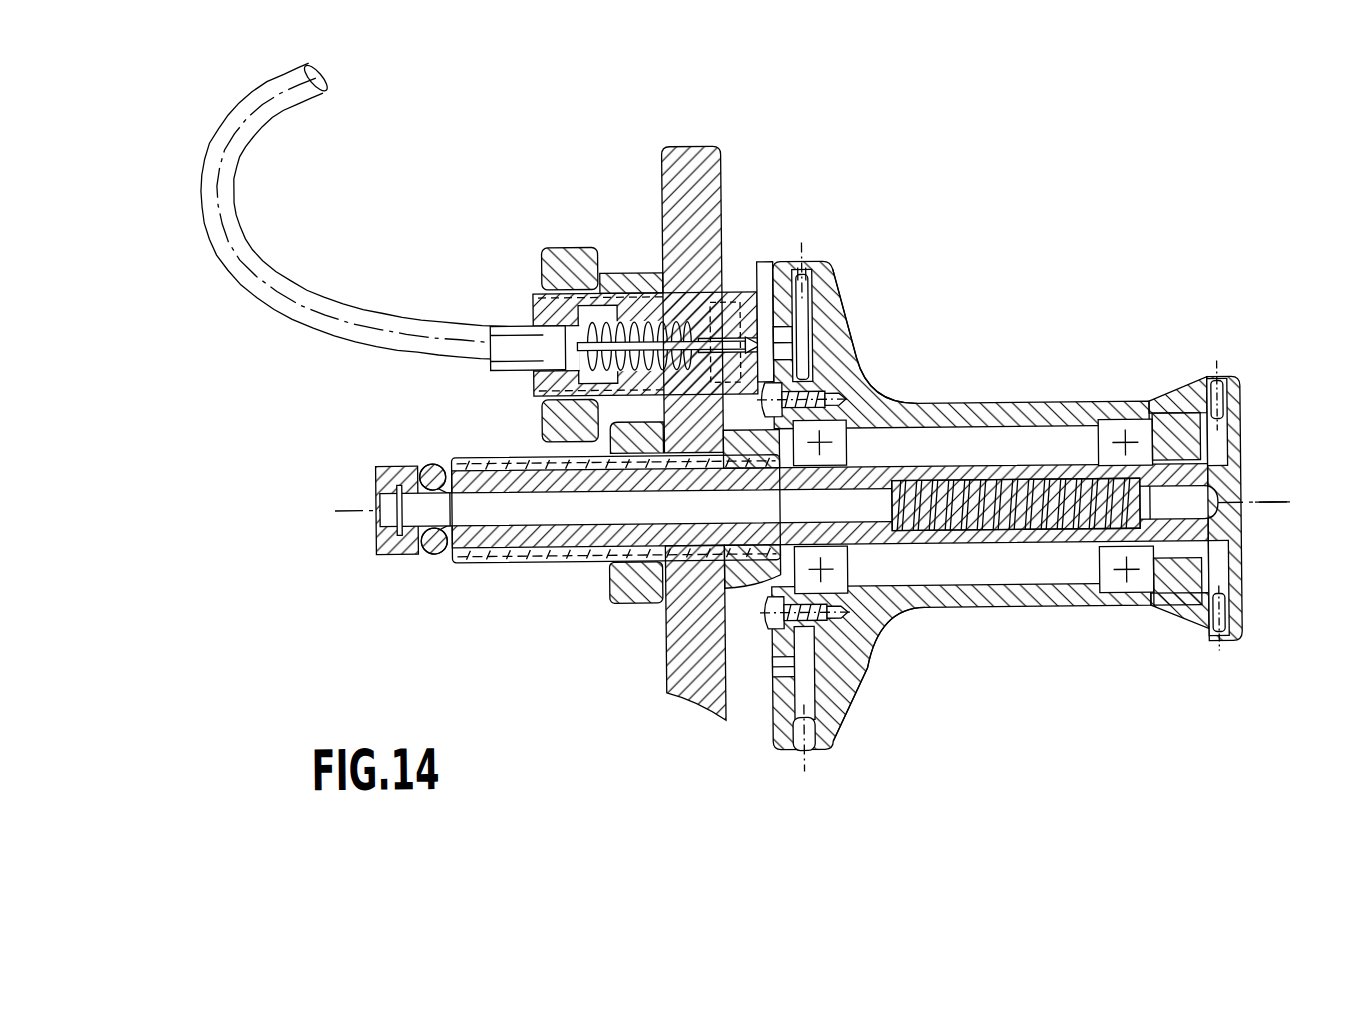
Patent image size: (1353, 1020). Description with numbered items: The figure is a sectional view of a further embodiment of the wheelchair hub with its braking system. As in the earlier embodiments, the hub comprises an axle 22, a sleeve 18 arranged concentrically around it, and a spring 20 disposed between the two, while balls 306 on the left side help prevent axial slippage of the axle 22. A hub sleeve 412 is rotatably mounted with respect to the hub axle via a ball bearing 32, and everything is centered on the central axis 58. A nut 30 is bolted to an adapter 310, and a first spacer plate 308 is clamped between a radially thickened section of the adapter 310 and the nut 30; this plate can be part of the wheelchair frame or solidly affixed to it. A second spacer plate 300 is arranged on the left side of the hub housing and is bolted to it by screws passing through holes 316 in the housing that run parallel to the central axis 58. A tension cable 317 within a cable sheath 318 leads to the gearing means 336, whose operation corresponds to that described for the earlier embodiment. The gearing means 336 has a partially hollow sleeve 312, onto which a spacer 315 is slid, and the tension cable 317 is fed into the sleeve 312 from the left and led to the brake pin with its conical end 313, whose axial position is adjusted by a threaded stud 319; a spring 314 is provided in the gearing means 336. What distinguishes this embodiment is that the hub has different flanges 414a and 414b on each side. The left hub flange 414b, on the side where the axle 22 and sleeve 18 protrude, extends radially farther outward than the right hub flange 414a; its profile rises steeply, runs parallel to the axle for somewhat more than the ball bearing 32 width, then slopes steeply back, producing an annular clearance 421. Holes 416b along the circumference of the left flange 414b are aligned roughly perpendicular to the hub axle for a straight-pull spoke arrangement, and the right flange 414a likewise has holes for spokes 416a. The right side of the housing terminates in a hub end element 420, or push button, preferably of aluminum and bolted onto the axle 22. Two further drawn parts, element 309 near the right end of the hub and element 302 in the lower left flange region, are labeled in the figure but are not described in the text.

The cable sheath 318 is at (222, 135).
The gearing means 336 is at (508, 269).
The adapter 310 is at (551, 248).
The tension cable 317 is at (495, 334).
The spacer 315 is at (614, 296).
The spring 314 is at (642, 296).
The sleeve 312 is at (737, 300).
The threaded stud 319 is at (759, 296).
The conical end 313 is at (777, 298).
The holes 416b is at (807, 265).
The hub flange 414b is at (834, 269).
The hub sleeve 412 is at (1021, 407).
The holes for spokes 416a is at (1217, 387).
The hub flange 414a is at (1233, 383).
The holes 316 is at (841, 403).
The bushing 309 is at (1194, 449).
The central axis 58 is at (1262, 505).
The balls 306 is at (428, 462).
The hub end element 420 is at (1239, 575).
The sleeve 18 is at (470, 539).
The axle 22 is at (528, 518).
The nut 30 is at (627, 586).
The first spacer plate 308 is at (688, 679).
The lower pin 302 is at (776, 677).
The second spacer plate 300 is at (806, 689).
The clearance 421 is at (820, 684).
The ball bearing 32 is at (834, 578).
The spring 20 is at (1020, 518).